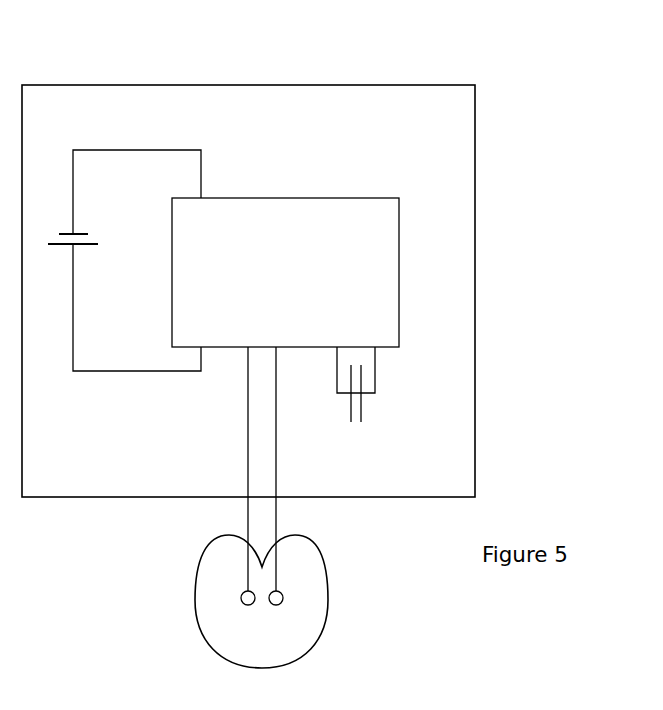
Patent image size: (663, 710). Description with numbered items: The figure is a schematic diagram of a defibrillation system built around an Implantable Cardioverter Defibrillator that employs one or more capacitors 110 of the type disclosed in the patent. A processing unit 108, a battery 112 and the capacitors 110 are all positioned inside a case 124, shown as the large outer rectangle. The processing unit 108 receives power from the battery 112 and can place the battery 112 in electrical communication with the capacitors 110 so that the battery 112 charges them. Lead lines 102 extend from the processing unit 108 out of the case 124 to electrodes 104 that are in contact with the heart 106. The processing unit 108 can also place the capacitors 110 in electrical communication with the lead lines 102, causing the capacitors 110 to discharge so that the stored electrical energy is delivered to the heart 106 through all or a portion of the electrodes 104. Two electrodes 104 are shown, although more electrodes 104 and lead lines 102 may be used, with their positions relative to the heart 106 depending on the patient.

The lead lines 102 is at (248, 450).
The electrodes 104 is at (279, 604).
The heart 106 is at (202, 643).
The processing unit 108 is at (266, 197).
The capacitors 110 is at (356, 438).
The battery 112 is at (88, 248).
The case 124 is at (41, 84).